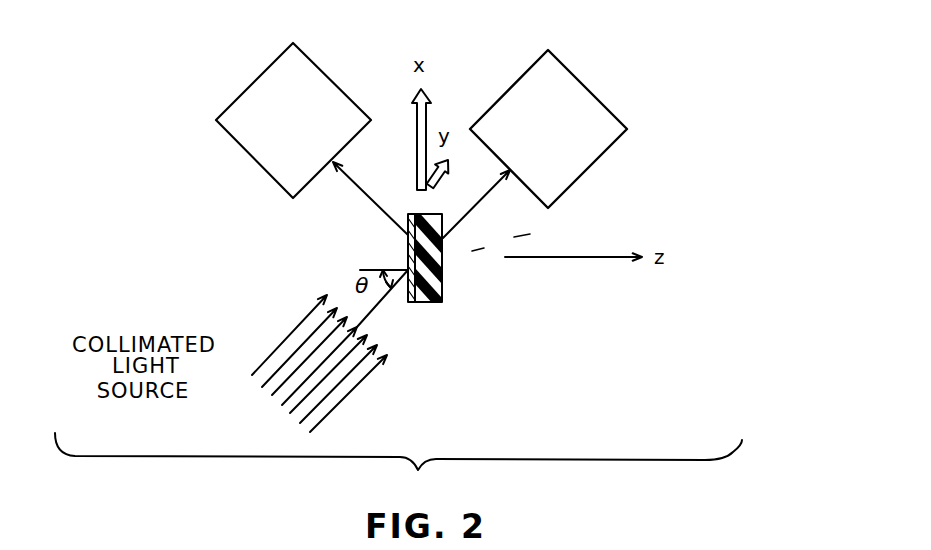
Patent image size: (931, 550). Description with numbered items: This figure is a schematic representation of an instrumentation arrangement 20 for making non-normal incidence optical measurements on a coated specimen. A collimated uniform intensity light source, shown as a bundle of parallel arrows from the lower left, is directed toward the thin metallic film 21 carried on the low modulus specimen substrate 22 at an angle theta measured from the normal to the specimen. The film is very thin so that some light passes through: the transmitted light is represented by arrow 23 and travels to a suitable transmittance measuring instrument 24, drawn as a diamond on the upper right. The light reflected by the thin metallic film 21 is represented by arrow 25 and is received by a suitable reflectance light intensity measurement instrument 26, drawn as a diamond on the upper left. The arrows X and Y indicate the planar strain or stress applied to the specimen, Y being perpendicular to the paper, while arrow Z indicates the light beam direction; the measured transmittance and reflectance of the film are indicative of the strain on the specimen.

The instrumentation arrangement 20 is at (318, 239).
The thin metallic film 21 is at (412, 302).
The low modulus specimen substrate 22 is at (443, 284).
The transmitted light arrow 23 is at (482, 200).
The transmittance measuring instrument 24 is at (561, 140).
The reflected light arrow 25 is at (377, 204).
The reflectance light intensity measurement instrument 26 is at (307, 133).